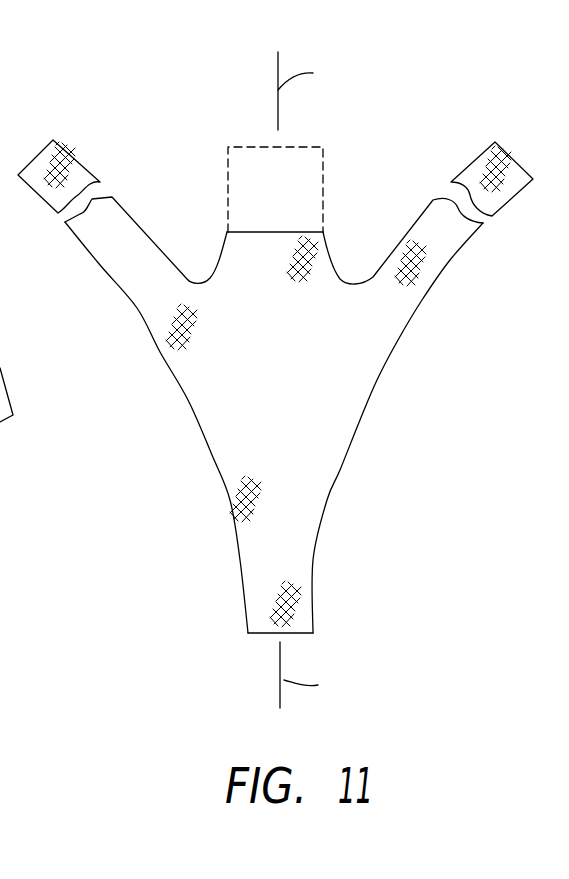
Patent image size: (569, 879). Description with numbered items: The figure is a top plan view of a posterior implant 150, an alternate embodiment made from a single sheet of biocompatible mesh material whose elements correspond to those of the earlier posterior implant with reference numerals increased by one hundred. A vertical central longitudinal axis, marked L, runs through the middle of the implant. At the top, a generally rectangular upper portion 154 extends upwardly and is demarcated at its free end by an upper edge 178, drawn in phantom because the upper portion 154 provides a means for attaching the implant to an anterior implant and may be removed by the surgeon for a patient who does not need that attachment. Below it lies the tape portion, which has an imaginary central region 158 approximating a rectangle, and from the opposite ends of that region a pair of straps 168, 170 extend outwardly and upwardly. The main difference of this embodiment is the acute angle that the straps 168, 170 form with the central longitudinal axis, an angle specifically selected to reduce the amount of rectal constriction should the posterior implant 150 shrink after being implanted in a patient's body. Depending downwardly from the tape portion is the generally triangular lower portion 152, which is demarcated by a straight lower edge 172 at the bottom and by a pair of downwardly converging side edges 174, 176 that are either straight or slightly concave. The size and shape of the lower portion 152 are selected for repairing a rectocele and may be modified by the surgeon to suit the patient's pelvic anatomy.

The posterior implant 150 is at (275, 371).
The lower portion 152 is at (291, 443).
The upper portion 154 is at (288, 307).
The imaginary central region 158 is at (291, 350).
The strap 168 is at (140, 227).
The strap 170 is at (407, 232).
The lower edge 172 is at (263, 637).
The side edge 174 is at (192, 413).
The side edge 176 is at (350, 432).
The upper edge 178 is at (293, 147).